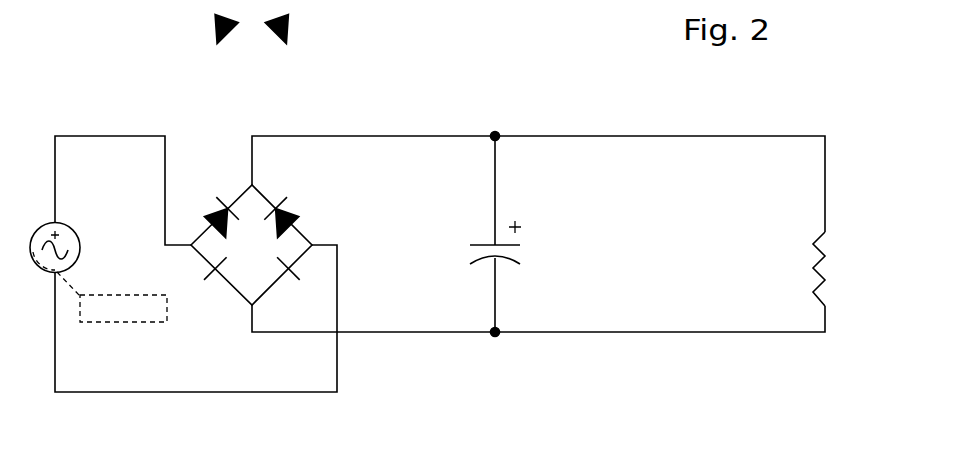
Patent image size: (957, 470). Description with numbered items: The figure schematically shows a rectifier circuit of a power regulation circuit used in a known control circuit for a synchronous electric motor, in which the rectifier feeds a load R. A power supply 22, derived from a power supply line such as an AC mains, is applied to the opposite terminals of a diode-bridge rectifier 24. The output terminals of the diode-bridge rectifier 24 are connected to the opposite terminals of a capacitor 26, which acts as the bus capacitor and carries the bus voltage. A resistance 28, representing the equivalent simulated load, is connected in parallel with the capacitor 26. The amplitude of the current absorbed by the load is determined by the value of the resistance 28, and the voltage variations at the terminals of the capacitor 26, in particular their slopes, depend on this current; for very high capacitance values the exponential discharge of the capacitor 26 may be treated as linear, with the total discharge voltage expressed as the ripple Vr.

The power supply 22 is at (56, 223).
The diode-bridge rectifier 24 is at (278, 193).
The capacitor 26 is at (508, 283).
The resistance 28 is at (800, 220).